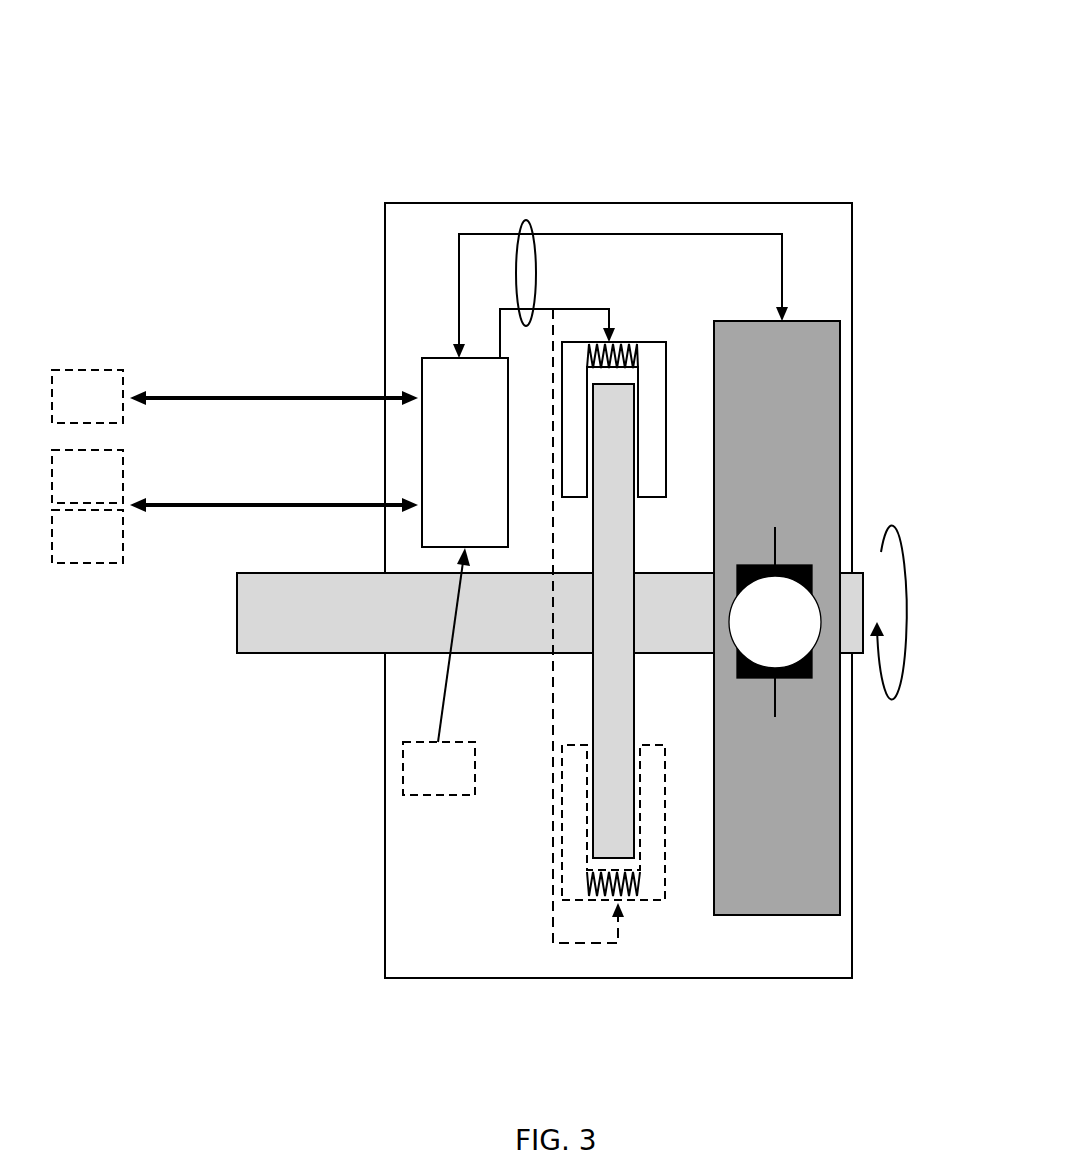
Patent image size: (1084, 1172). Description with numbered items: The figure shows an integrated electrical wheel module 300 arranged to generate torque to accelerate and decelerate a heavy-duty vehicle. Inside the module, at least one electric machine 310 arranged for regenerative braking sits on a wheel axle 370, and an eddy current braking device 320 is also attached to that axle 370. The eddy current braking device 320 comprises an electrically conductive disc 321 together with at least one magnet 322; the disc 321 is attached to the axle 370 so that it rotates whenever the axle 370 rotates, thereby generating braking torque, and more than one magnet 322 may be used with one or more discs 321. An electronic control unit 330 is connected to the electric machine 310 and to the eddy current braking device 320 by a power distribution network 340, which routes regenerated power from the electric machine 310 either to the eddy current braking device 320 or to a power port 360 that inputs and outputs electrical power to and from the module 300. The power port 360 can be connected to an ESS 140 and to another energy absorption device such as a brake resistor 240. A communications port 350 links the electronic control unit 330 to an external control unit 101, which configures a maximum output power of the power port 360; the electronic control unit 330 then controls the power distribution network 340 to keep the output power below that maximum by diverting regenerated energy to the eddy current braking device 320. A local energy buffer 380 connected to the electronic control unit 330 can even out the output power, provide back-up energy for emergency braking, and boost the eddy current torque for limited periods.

The wheel module 300 is at (244, 77).
The electric machine 310 is at (838, 415).
The eddy current braking device 320 is at (648, 355).
The electrically conductive disc 321 is at (605, 668).
The magnet 322 is at (577, 787).
The electronic control unit 330 is at (440, 373).
The power distribution network 340 is at (515, 256).
The communications port 350 is at (380, 408).
The power port 360 is at (380, 511).
The wheel axle 370 is at (325, 643).
The local energy buffer 380 is at (439, 671).
The external control unit 101 is at (87, 396).
The ESS 140 is at (87, 476).
The brake resistor 240 is at (87, 536).